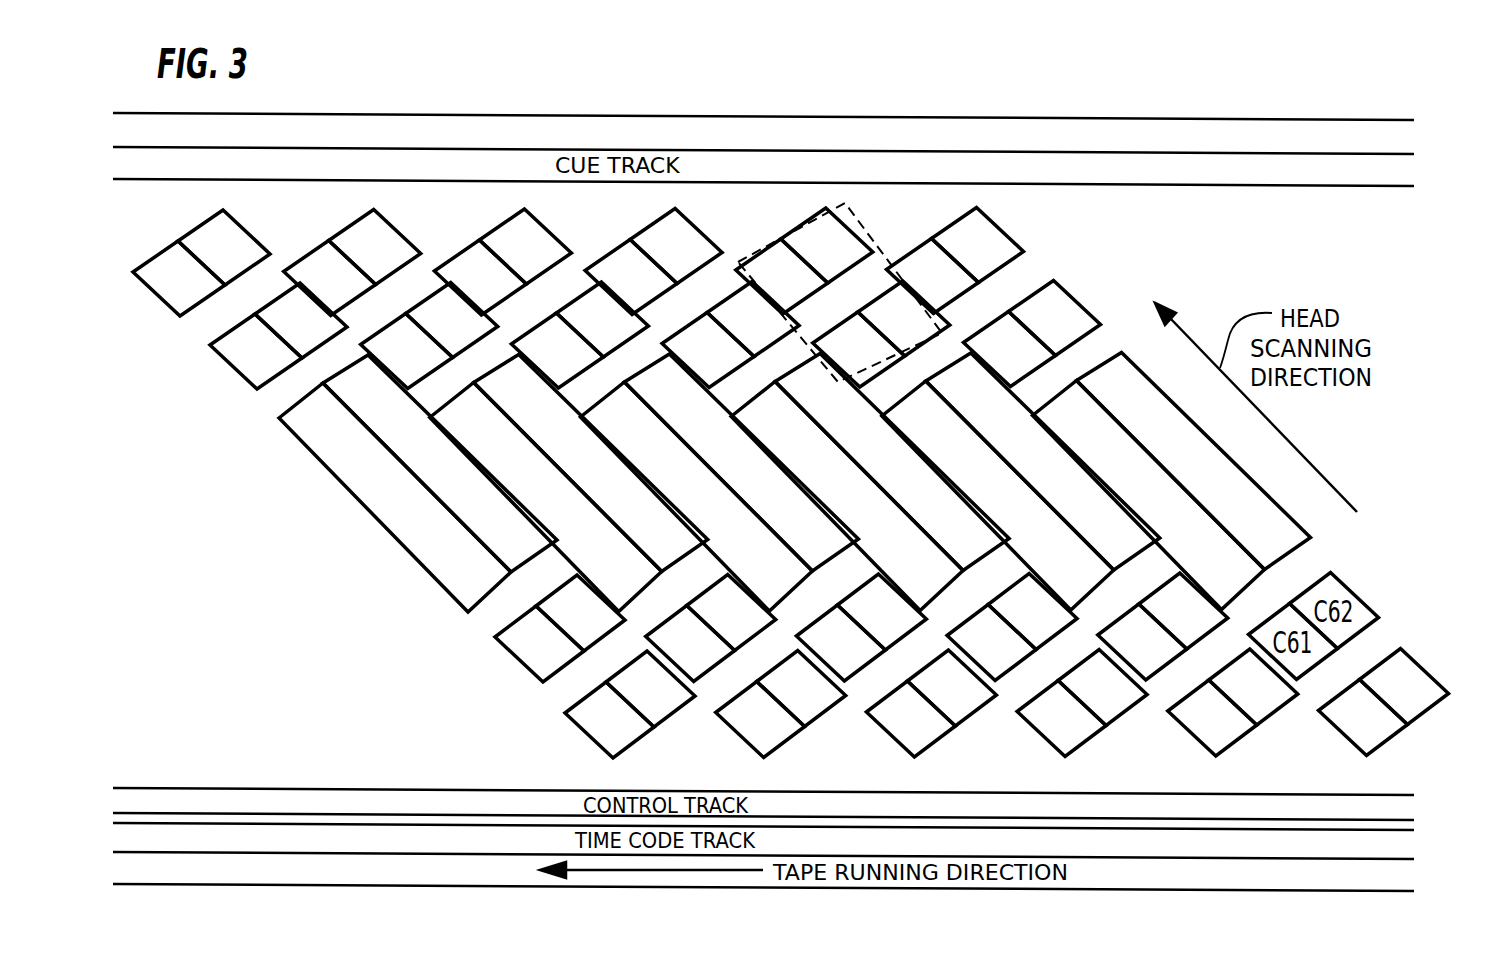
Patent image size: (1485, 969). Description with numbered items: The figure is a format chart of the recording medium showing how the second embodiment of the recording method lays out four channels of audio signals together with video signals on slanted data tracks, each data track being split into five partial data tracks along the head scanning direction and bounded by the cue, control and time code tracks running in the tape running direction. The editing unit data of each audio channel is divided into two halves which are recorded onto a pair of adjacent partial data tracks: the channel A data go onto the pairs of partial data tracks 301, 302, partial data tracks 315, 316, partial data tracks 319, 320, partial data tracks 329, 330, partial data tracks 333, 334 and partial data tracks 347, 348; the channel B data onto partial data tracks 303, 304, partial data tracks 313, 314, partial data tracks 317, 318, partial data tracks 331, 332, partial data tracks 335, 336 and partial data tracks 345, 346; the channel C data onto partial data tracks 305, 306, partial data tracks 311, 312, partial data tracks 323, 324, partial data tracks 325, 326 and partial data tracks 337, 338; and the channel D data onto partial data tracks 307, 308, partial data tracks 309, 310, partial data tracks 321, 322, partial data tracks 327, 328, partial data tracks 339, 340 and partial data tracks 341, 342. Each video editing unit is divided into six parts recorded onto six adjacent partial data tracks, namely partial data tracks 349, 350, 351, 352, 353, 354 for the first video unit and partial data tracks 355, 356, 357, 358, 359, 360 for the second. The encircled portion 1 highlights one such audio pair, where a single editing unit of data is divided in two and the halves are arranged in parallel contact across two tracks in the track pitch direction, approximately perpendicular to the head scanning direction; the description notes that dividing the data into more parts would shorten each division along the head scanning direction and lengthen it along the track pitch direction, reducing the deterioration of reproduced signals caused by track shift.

The portion 1 is at (840, 213).
The partial data track 301 is at (617, 728).
The partial data track 302 is at (659, 694).
The partial data track 303 is at (543, 652).
The partial data track 304 is at (588, 618).
The partial data track 305 is at (258, 359).
The partial data track 306 is at (303, 325).
The partial data track 307 is at (166, 268).
The partial data track 308 is at (200, 238).
The partial data track 309 is at (768, 728).
The partial data track 310 is at (810, 694).
The partial data track 311 is at (694, 652).
The partial data track 312 is at (739, 618).
The partial data track 313 is at (409, 359).
The partial data track 314 is at (454, 325).
The partial data track 315 is at (317, 268).
The partial data track 316 is at (351, 238).
The partial data track 317 is at (918, 727).
The partial data track 318 is at (960, 693).
The partial data track 319 is at (844, 651).
The partial data track 320 is at (889, 617).
The partial data track 321 is at (559, 358).
The partial data track 322 is at (604, 324).
The partial data track 323 is at (467, 267).
The partial data track 324 is at (501, 237).
The partial data track 325 is at (1069, 727).
The partial data track 326 is at (1111, 693).
The partial data track 327 is at (995, 651).
The partial data track 328 is at (1040, 617).
The partial data track 329 is at (710, 358).
The partial data track 330 is at (755, 324).
The partial data track 331 is at (618, 267).
The partial data track 332 is at (652, 237).
The partial data track 333 is at (1220, 726).
The partial data track 334 is at (1262, 692).
The partial data track 335 is at (1146, 650).
The partial data track 336 is at (1191, 616).
The partial data track 337 is at (861, 357).
The partial data track 338 is at (906, 323).
The partial data track 339 is at (769, 266).
The partial data track 340 is at (803, 236).
The partial data track 341 is at (1371, 726).
The partial data track 342 is at (1413, 692).
The partial data track 345 is at (1012, 357).
The partial data track 346 is at (1057, 323).
The partial data track 347 is at (920, 266).
The partial data track 348 is at (954, 236).
The partial data track 349 is at (399, 502).
The partial data track 350 is at (446, 472).
The partial data track 351 is at (550, 502).
The partial data track 352 is at (597, 472).
The partial data track 353 is at (700, 501).
The partial data track 354 is at (747, 471).
The partial data track 355 is at (851, 501).
The partial data track 356 is at (898, 471).
The partial data track 357 is at (1002, 500).
The partial data track 358 is at (1049, 470).
The partial data track 359 is at (1153, 500).
The partial data track 360 is at (1200, 470).